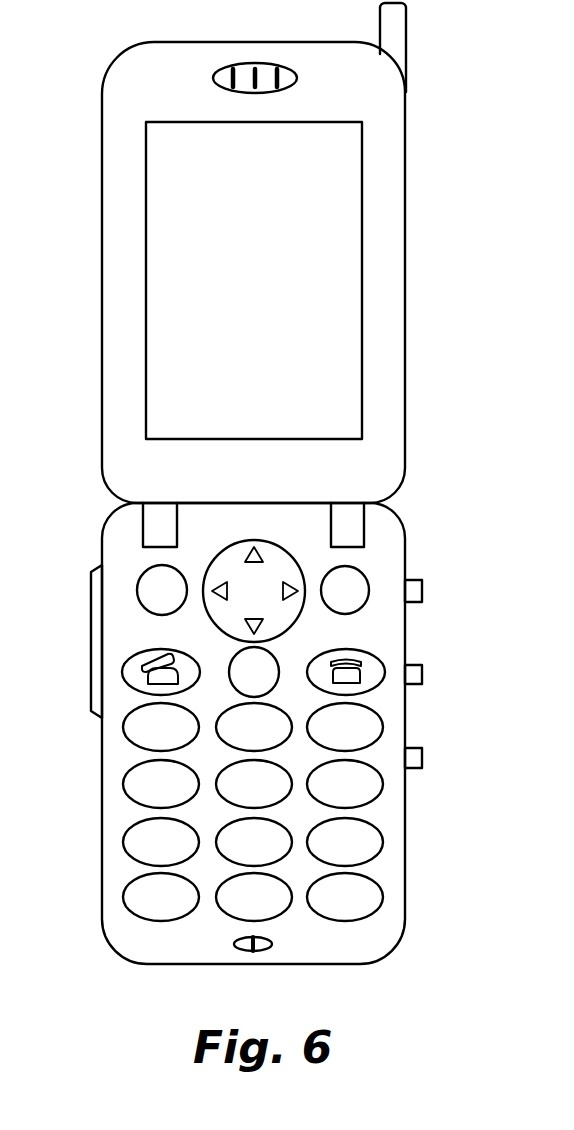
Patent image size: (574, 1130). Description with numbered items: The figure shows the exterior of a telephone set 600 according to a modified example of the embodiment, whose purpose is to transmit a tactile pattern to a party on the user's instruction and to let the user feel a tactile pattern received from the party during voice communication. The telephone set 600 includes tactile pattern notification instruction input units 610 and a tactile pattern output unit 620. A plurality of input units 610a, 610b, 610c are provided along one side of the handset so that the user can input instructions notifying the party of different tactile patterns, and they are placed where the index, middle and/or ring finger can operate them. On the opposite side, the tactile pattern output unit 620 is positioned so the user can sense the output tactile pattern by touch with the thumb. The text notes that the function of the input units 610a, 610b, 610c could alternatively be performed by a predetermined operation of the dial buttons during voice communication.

The telephone set 600 is at (285, 483).
The tactile pattern notification instruction input unit 610 is at (474, 629).
The input unit 610a is at (422, 591).
The input unit 610b is at (422, 674).
The input unit 610c is at (422, 757).
The tactile pattern output unit 620 is at (91, 640).